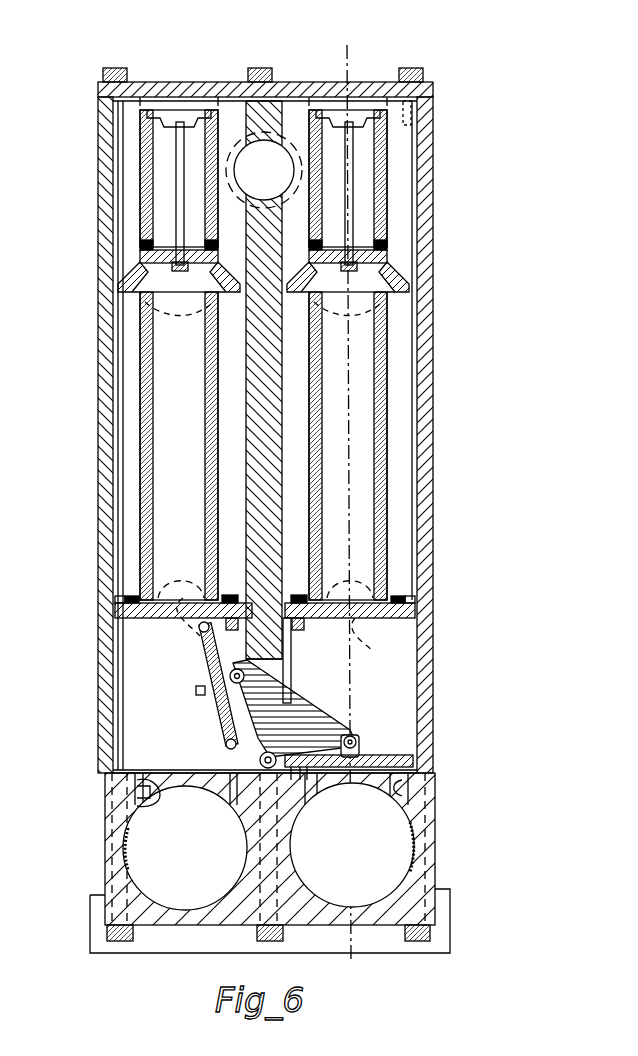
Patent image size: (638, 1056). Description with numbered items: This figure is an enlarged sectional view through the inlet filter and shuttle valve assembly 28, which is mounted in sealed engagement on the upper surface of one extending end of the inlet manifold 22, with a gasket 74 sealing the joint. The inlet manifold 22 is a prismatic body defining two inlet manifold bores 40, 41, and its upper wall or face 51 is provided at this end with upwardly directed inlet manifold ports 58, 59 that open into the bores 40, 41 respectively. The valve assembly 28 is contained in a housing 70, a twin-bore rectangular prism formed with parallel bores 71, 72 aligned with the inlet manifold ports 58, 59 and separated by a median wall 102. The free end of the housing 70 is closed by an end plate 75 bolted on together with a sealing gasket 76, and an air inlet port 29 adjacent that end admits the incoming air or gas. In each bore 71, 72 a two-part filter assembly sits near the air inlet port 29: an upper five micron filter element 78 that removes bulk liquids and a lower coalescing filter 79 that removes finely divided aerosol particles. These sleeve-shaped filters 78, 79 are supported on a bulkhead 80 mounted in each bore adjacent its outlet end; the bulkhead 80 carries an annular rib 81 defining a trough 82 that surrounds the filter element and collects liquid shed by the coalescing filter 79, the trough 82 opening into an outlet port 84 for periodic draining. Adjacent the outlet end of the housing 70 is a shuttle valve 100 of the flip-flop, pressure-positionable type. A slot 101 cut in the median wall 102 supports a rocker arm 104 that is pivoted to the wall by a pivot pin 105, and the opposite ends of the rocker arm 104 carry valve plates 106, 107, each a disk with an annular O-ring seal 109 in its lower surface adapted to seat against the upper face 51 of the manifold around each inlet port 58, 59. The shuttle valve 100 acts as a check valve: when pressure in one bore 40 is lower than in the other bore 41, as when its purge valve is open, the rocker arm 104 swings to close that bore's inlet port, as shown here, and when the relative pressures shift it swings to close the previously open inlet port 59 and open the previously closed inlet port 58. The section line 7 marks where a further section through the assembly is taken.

The section line 7- 7 is at (347, 14).
The inlet manifold 22 is at (438, 834).
The inlet filter and shuttle valve assembly 28 is at (262, 435).
The air inlet port 29 is at (258, 152).
The inlet manifold bore 40 is at (384, 888).
The inlet manifold bore 41 is at (170, 906).
The upper wall or face of inlet manifold 51 is at (156, 760).
The inlet manifold port 58 is at (396, 790).
The inlet manifold port 59 is at (132, 806).
The housing 70 is at (251, 435).
The housing bore 71 is at (412, 402).
The housing bore 72 is at (122, 395).
The gasket 74 is at (114, 772).
The end plate 75 is at (193, 84).
The sealing gasket 76 is at (414, 98).
The five micron filter element 78 is at (142, 158).
The coalescing filter 79 is at (140, 320).
The bulkhead 80 is at (142, 622).
The annular rib 81 is at (230, 596).
The trough 82 is at (134, 598).
The outlet port 84 is at (280, 594).
The shuttle valve 100 is at (292, 700).
The slot 101 is at (272, 668).
The median wall 102 is at (293, 346).
The rocker arm 104 is at (305, 712).
The pivot pin 105 is at (260, 760).
The valve plate 106 is at (396, 722).
The valve plate 107 is at (204, 650).
The annular O-ring seal 109 is at (224, 746).